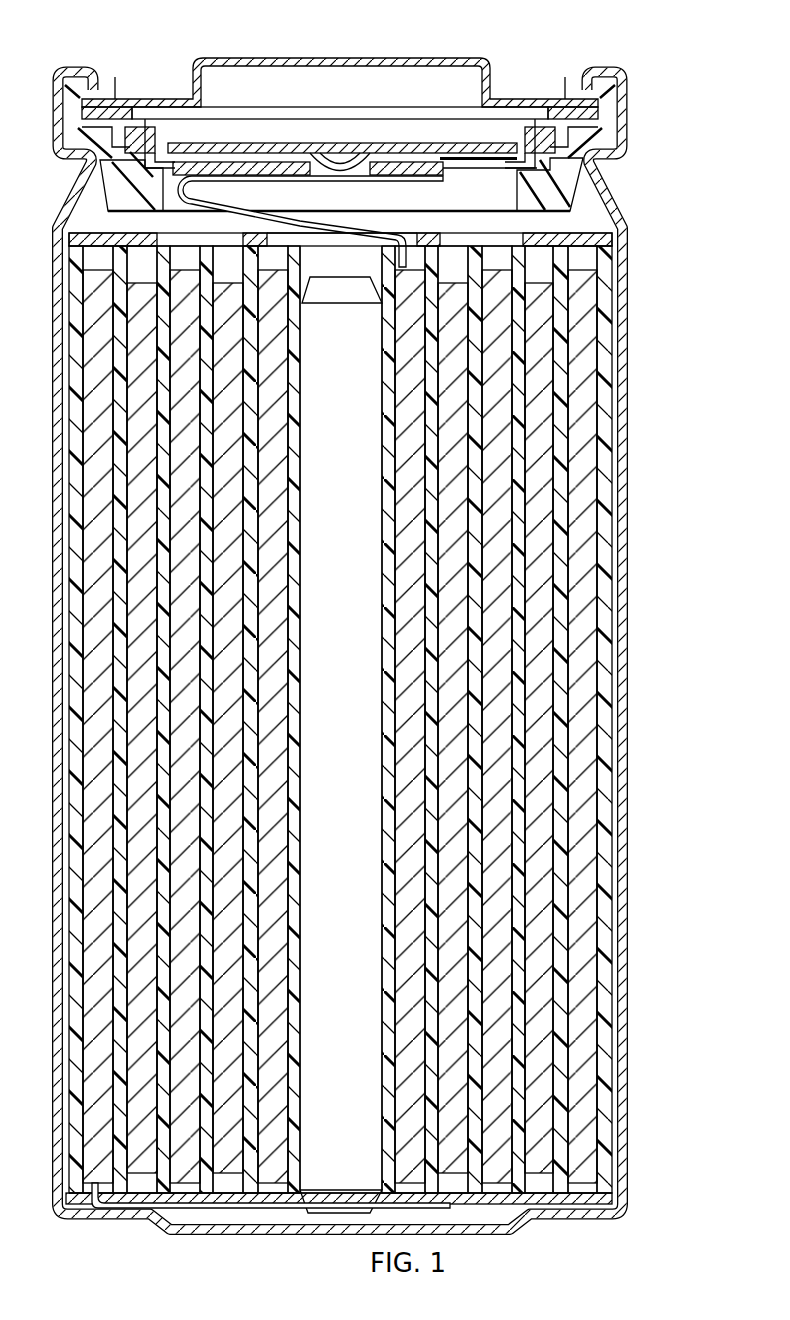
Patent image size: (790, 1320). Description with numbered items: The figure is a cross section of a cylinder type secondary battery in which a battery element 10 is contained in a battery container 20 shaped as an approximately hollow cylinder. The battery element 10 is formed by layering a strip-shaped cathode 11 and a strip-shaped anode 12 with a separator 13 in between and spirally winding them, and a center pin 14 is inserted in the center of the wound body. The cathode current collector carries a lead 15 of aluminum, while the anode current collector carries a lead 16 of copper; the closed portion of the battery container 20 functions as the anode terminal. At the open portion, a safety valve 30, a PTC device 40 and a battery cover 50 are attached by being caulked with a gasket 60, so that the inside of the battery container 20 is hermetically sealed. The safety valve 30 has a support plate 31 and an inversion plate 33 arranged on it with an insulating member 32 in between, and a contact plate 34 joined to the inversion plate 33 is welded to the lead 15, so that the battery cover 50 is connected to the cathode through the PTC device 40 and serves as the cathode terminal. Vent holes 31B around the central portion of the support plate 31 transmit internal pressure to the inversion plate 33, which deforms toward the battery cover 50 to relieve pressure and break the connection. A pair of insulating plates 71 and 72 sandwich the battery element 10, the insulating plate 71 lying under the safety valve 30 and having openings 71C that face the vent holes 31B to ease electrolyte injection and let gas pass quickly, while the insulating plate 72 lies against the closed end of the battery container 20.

The battery element 10 is at (613, 283).
The cathode 11 is at (543, 319).
The anode 12 is at (577, 351).
The separator 13 is at (607, 397).
The center pin 14 is at (345, 498).
The lead 15 is at (382, 412).
The lead 16 is at (347, 1218).
The battery container 20 is at (628, 705).
The safety valve 30 is at (127, 122).
The support plate 31 is at (270, 177).
The vent hole 31B is at (497, 184).
The insulating member 32 is at (493, 160).
The inversion plate 33 is at (183, 143).
The contact plate 34 is at (397, 177).
The PTC device 40 is at (607, 118).
The battery cover 50 is at (550, 100).
The gasket 60 is at (607, 138).
The insulating plate 71 is at (590, 238).
The opening 71C is at (492, 225).
The insulating plate 72 is at (607, 1198).